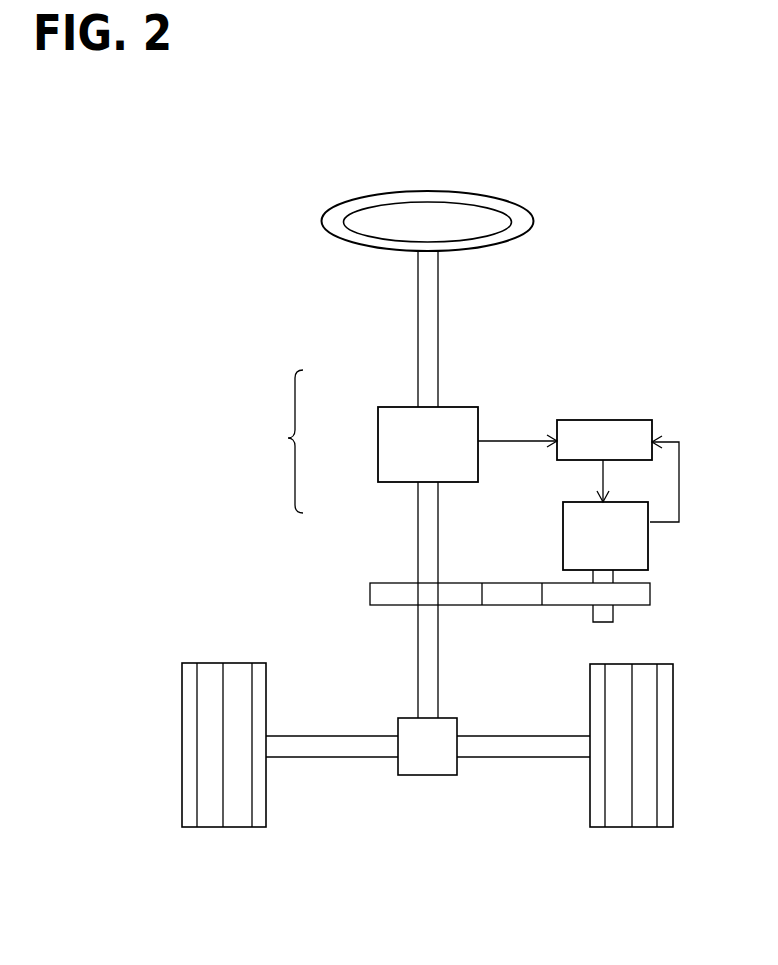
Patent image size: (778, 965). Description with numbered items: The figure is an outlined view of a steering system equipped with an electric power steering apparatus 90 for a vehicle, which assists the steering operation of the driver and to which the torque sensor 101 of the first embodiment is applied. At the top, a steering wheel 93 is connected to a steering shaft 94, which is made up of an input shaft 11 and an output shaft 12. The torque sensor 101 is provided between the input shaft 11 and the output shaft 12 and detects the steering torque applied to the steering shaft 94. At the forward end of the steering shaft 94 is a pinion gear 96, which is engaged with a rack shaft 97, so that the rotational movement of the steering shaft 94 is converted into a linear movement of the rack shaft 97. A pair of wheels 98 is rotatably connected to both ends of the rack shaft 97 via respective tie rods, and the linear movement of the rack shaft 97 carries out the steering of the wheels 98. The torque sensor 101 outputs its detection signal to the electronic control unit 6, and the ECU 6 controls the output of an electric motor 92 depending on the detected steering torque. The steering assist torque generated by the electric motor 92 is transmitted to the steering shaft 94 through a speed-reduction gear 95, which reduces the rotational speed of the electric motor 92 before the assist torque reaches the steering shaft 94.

The electronic control unit 6 is at (605, 420).
The input shaft 11 is at (430, 372).
The output shaft 12 is at (430, 506).
The electric power steering apparatus 90 is at (598, 317).
The electric motor 92 is at (650, 541).
The steering wheel 93 is at (322, 222).
The steering shaft 94 is at (288, 438).
The speed-reduction gear 95 is at (650, 596).
The pinion gear 96 is at (420, 777).
The rack shaft 97 is at (325, 760).
The wheels 98 is at (237, 829).
The torque sensor 101 is at (463, 407).